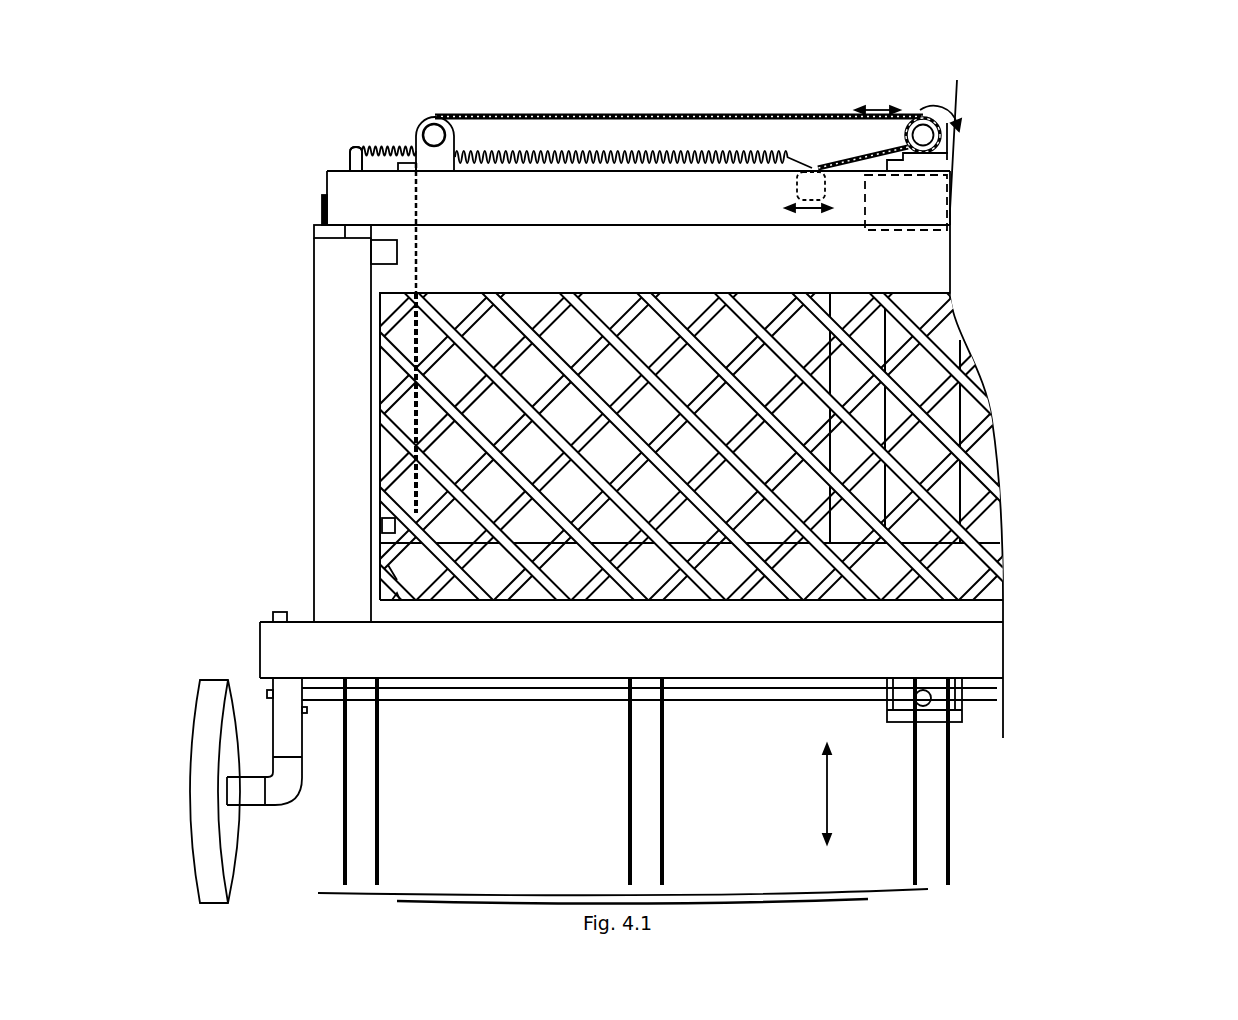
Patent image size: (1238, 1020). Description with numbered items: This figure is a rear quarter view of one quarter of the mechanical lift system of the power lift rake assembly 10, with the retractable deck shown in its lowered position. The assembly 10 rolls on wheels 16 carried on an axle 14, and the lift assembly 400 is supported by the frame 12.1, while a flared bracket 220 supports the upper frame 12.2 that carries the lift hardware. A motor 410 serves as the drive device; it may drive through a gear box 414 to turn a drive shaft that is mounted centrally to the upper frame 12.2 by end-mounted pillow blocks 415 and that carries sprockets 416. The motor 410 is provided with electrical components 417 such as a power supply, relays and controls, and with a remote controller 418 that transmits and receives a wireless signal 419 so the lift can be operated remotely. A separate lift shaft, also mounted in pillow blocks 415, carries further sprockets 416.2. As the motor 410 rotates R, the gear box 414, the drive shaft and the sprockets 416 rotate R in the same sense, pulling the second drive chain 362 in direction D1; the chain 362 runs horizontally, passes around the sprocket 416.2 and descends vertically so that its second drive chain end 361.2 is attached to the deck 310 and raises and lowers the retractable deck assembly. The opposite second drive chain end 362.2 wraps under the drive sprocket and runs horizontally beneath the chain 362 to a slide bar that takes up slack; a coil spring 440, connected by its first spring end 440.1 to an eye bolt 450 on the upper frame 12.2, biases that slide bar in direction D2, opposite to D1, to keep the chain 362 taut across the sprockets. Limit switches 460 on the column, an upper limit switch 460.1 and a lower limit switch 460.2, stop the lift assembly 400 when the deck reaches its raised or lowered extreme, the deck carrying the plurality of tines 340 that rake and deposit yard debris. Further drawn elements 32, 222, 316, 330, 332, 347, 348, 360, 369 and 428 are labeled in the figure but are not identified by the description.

The power lift rake assembly 10 is at (206, 85).
The frame 12.1 is at (945, 637).
The upper frame 12.2 is at (655, 185).
The axle 14 is at (283, 733).
The wheel 16 is at (203, 745).
The lattice wall 32 is at (933, 418).
The flared bracket 220 is at (299, 356).
The column post 222 is at (320, 228).
The deck 310 is at (757, 446).
The lattice side support 316 is at (960, 566).
The bottom rail 330 is at (609, 582).
The bottom rail profile 332 is at (383, 596).
The plurality of tines 340 is at (698, 791).
The leg (xy adjustable) 347 is at (378, 783).
The leg (x adjustable) 348 is at (663, 832).
The traction element 360 is at (563, 192).
The second drive chain 362 is at (600, 116).
The second drive chain end 362.2 is at (815, 165).
The chain guide section 369 is at (417, 332).
The second drive chain end 361.2 is at (417, 490).
The lift assembly 400 is at (663, 65).
The motor 410 is at (926, 199).
The gear box 414 is at (1021, 151).
The pillow block 415 is at (932, 163).
The sprocket 416 is at (925, 135).
The sprocket 416.2 is at (436, 133).
The electrical components or parts 417 is at (1013, 194).
The remote controller 418 is at (938, 123).
The wireless signal 419 is at (1069, 198).
The spring support 428 is at (430, 125).
The coil spring 440 is at (548, 155).
The first spring end 440.1 is at (377, 147).
The eye bolt 450 is at (352, 163).
The limit switch 460 is at (256, 387).
The upper limit switch 460.1 is at (383, 250).
The lower limit switch 460.2 is at (382, 527).
The direction D1 is at (868, 108).
The direction D2 is at (788, 209).
The rotation R is at (920, 109).